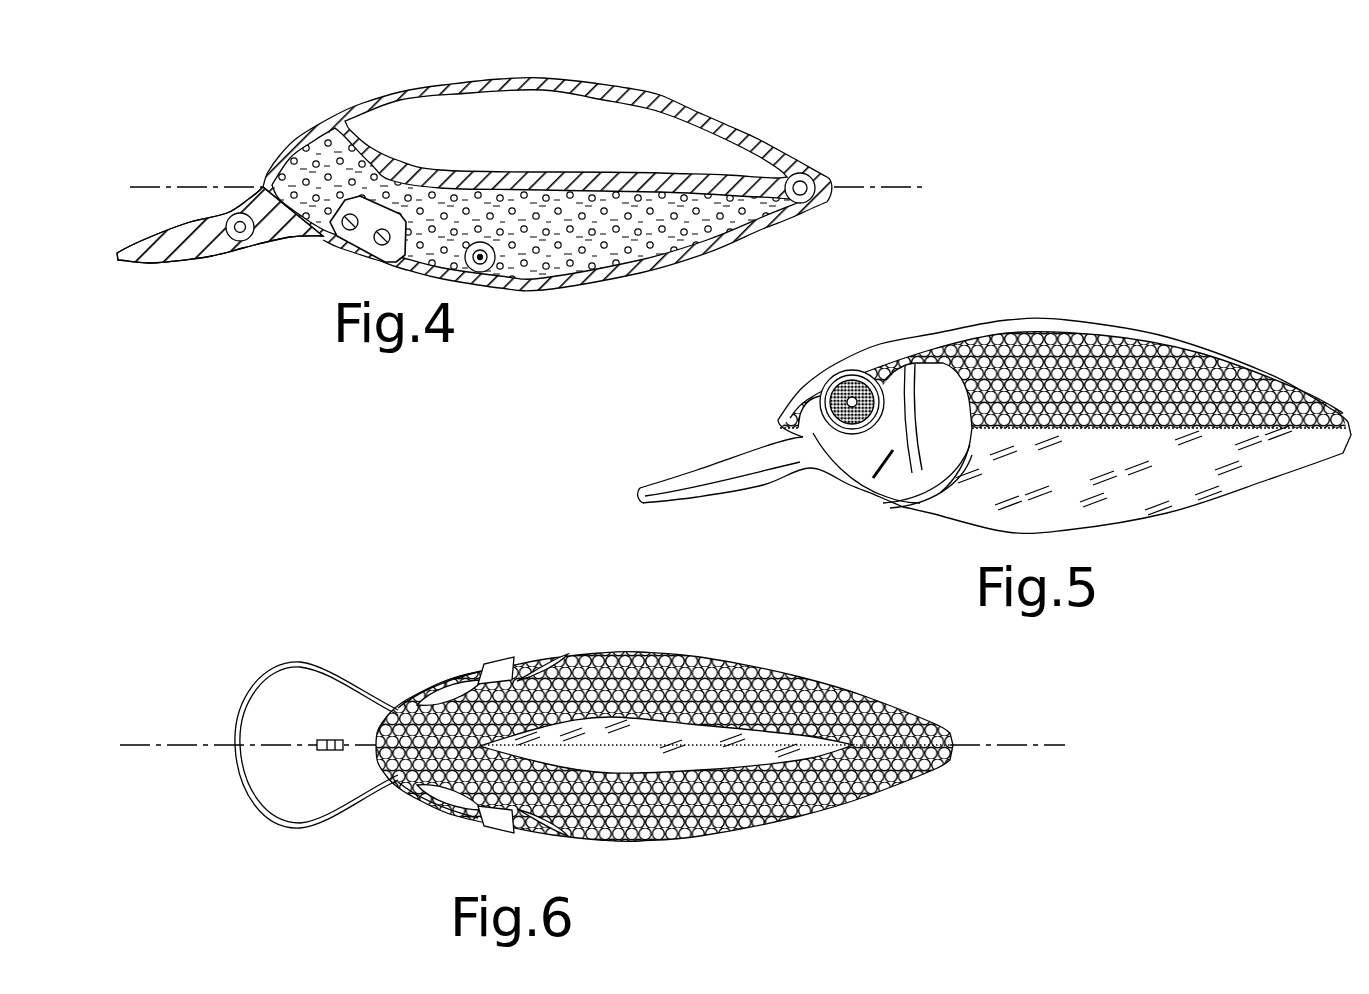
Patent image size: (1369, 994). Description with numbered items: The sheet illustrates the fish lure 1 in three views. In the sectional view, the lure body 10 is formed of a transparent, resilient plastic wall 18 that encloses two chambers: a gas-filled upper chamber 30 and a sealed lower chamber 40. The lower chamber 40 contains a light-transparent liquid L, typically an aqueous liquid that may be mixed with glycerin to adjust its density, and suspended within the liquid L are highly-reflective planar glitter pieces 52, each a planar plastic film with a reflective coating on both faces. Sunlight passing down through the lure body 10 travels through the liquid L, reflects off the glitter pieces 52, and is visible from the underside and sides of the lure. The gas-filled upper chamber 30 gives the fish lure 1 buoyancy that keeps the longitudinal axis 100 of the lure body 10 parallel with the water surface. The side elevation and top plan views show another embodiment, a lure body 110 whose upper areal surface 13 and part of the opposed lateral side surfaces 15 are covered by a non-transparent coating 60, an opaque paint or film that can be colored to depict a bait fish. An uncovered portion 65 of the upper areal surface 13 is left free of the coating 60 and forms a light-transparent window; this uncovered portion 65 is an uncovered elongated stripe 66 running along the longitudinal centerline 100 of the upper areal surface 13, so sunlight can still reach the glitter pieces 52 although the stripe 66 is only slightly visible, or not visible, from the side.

In FIG. 4, the fish lure 1 is at (474, 172).
In FIG. 4, the lure body 10 is at (547, 172).
In FIG. 4, the transparent plastic wall 18 is at (460, 82).
In FIG. 4, the gas-filled upper chamber 30 is at (578, 143).
In FIG. 4, the lower chamber 40 is at (538, 220).
In FIG. 4, the planar glitter pieces 52 is at (622, 227).
In FIG. 4, the longitudinal axis 100 is at (870, 187).
In FIG. 6, the longitudinal axis 100 is at (1007, 747).
In FIG. 4, the transparent liquid L is at (313, 150).
In FIG. 5, the lure body 110 is at (994, 388).
In FIG. 6, the lure body 110 is at (594, 718).
In FIG. 5, the upper areal surface 13 is at (994, 388).
In FIG. 6, the upper areal surface 13 is at (664, 740).
In FIG. 5, the opposed lateral side surfaces 15 is at (1203, 403).
In FIG. 5, the non-transparent coating 60 is at (1193, 377).
In FIG. 5, the uncovered portion 65 is at (1057, 320).
In FIG. 5, the uncovered elongated stripe 66 is at (1085, 320).
In FIG. 6, the uncovered elongated stripe 66 is at (770, 757).